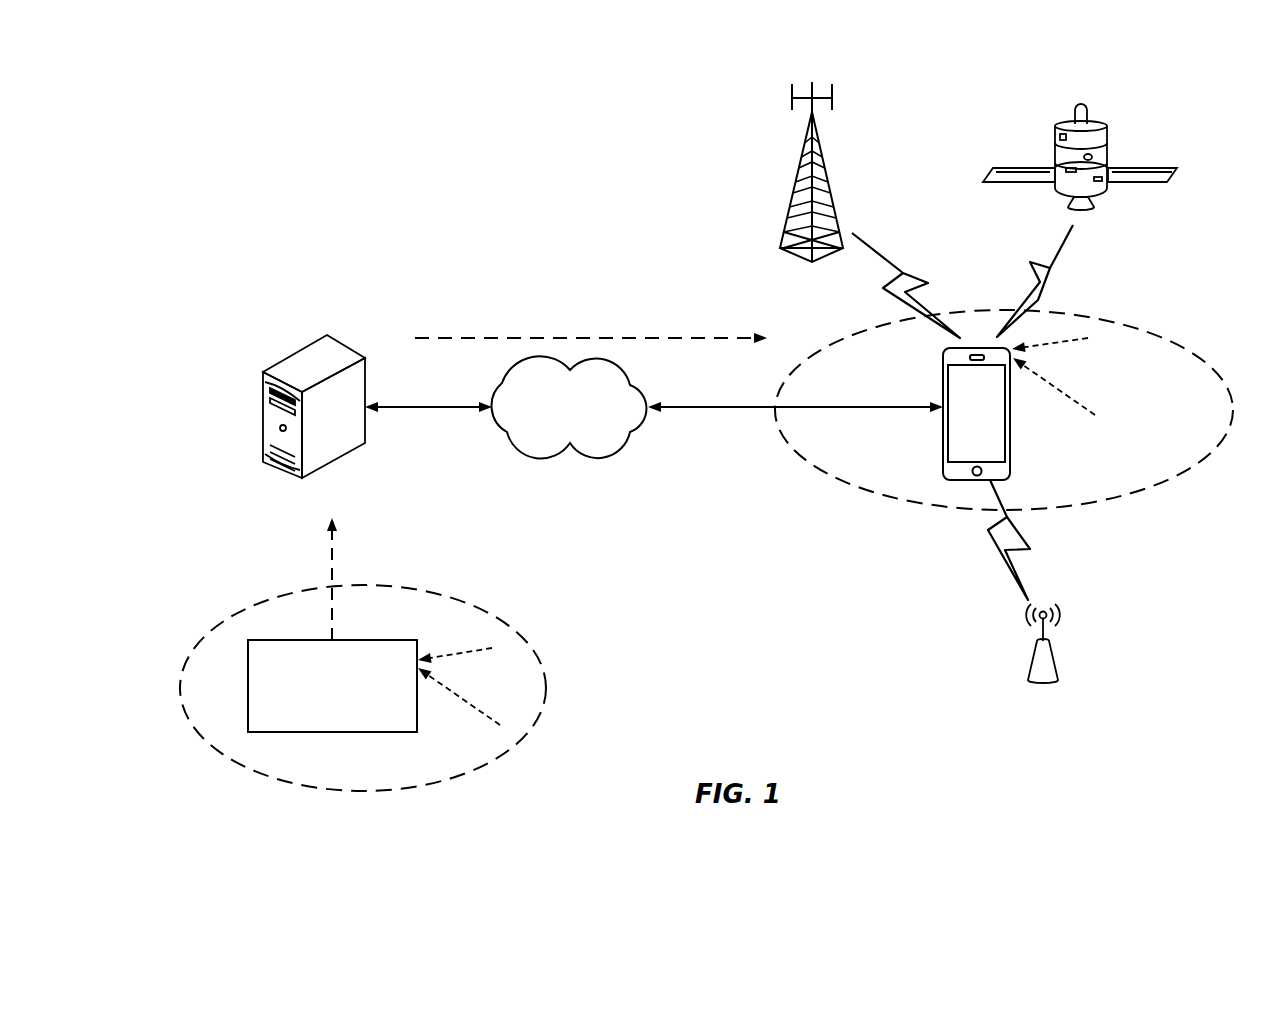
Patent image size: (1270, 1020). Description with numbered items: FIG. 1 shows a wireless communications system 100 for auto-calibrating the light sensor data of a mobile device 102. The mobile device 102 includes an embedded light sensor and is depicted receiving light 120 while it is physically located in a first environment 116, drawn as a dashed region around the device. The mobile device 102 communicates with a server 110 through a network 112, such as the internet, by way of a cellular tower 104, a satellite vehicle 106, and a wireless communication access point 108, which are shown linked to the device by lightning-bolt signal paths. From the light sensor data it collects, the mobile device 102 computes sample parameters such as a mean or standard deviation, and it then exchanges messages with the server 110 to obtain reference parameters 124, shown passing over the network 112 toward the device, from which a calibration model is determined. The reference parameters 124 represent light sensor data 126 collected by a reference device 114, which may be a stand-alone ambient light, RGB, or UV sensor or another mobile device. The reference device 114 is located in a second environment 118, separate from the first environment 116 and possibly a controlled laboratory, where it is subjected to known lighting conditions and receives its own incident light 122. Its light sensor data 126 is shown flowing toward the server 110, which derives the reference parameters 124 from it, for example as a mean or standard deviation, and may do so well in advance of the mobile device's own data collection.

The wireless communications system 100 is at (275, 154).
The mobile device 102 is at (943, 372).
The cellular tower 104 is at (822, 158).
The satellite vehicle 106 is at (1098, 125).
The wireless communication access point 108 is at (1043, 683).
The server 110 is at (306, 346).
The network 112 is at (633, 383).
The reference device 114 is at (355, 732).
The first environment 116 is at (1197, 352).
The second environment 118 is at (487, 612).
The light 120 is at (1073, 398).
The light at reference device 122 is at (468, 702).
The reference parameters 124 is at (568, 338).
The light sensor data 126 is at (333, 563).